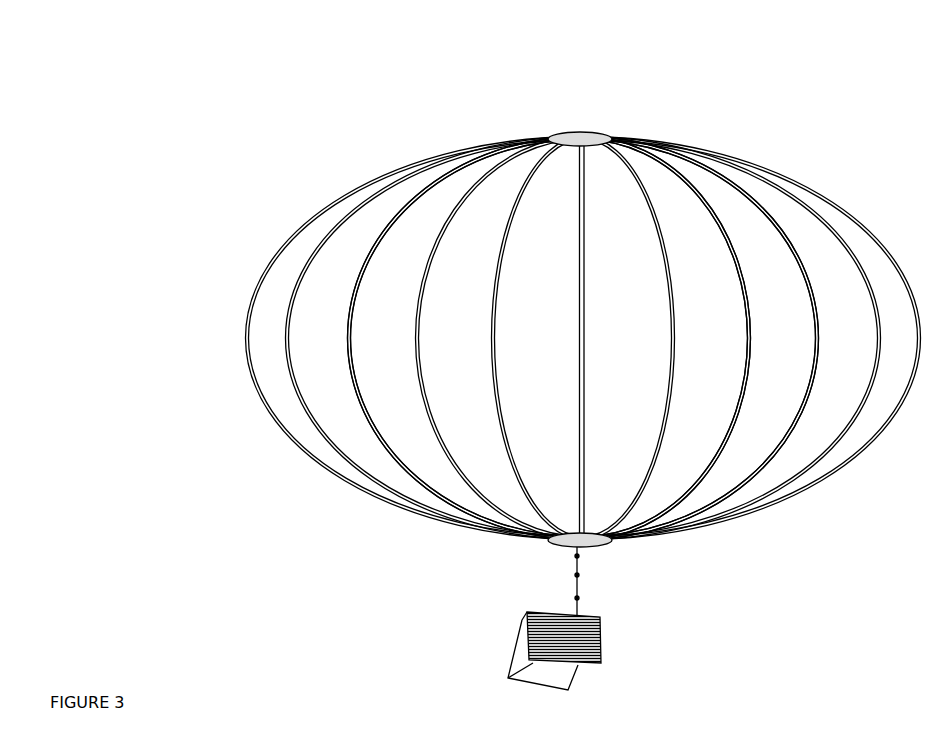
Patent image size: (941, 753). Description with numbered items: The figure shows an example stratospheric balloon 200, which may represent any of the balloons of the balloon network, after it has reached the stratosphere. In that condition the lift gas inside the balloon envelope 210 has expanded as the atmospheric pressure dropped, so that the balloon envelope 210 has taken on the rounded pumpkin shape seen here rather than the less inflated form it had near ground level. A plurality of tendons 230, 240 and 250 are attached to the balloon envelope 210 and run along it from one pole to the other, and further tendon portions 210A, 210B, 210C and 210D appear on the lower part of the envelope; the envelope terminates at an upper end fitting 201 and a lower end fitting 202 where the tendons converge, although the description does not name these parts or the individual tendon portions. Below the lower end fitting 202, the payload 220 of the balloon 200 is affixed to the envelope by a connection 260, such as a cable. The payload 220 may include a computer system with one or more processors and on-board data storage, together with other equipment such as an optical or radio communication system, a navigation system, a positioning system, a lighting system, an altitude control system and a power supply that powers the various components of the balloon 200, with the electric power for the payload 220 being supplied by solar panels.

The stratospheric balloon 200 is at (476, 54).
The top cap 201 is at (582, 133).
The bottom cap 202 is at (567, 550).
The balloon envelope 210 is at (326, 217).
The rib 210A is at (398, 430).
The rib 210B is at (467, 430).
The rib 210C is at (638, 437).
The rib 210D is at (707, 425).
The payload 220 is at (600, 625).
The tendon 230 is at (645, 182).
The tendon 240 is at (367, 192).
The tendon 250 is at (424, 172).
The connection 260 is at (582, 590).